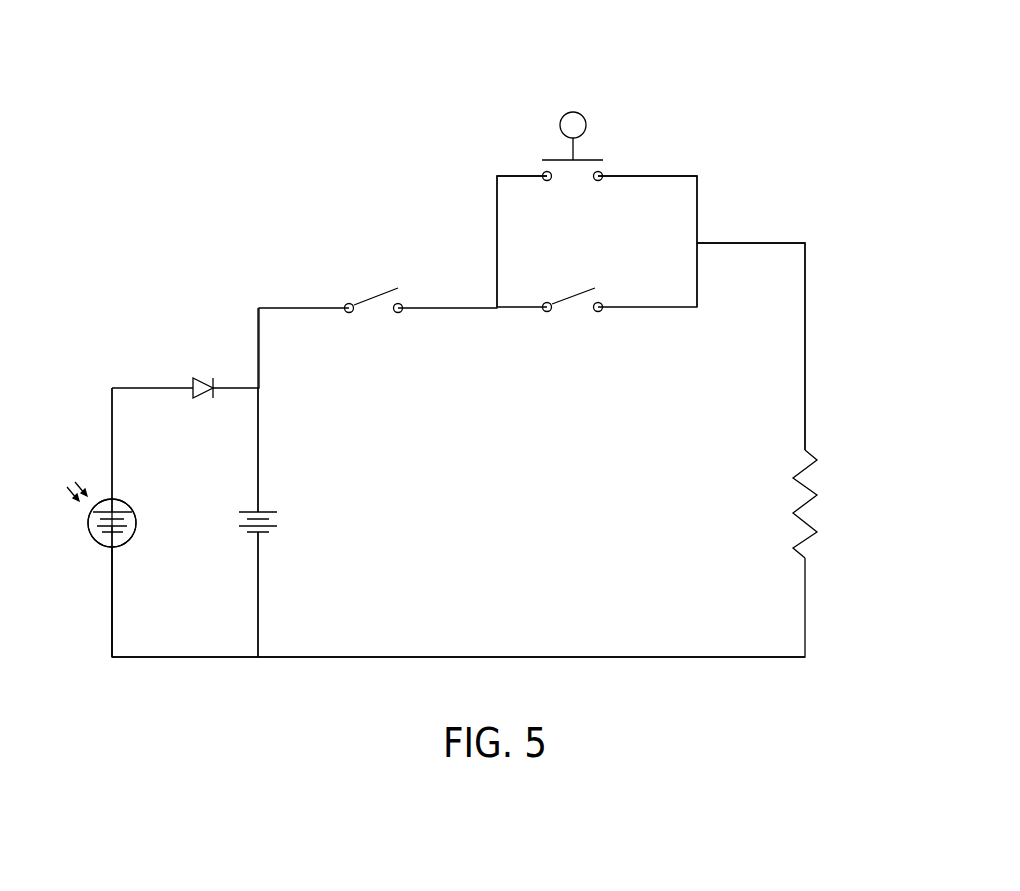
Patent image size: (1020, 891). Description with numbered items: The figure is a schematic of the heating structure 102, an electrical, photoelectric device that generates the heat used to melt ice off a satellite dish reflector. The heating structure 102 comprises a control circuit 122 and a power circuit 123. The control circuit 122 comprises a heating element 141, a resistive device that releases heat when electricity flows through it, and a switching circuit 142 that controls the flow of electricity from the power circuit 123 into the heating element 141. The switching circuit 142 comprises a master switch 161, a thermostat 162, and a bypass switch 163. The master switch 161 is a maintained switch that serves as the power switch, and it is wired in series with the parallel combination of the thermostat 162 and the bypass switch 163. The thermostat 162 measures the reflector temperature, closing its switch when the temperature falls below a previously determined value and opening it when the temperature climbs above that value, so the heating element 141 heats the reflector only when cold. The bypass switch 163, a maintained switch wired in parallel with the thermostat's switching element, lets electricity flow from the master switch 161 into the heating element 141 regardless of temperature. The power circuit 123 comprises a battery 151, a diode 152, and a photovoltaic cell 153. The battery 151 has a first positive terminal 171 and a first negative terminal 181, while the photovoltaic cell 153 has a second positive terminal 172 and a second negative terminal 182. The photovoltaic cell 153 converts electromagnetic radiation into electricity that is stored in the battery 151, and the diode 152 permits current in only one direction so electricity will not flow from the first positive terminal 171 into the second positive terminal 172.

The heating structure 102 is at (318, 94).
The control circuit 122 is at (725, 210).
The power circuit 123 is at (180, 677).
The heating element 141 is at (833, 497).
The switching circuit 142 is at (683, 165).
The battery 151 is at (280, 525).
The diode 152 is at (202, 375).
The photovoltaic cell 153 is at (95, 542).
The master switch 161 is at (373, 283).
The thermostat 162 is at (587, 137).
The bypass switch 163 is at (575, 312).
The first positive terminal 171 is at (268, 502).
The second positive terminal 172 is at (113, 503).
The first negative terminal 181 is at (262, 562).
The second negative terminal 182 is at (113, 568).